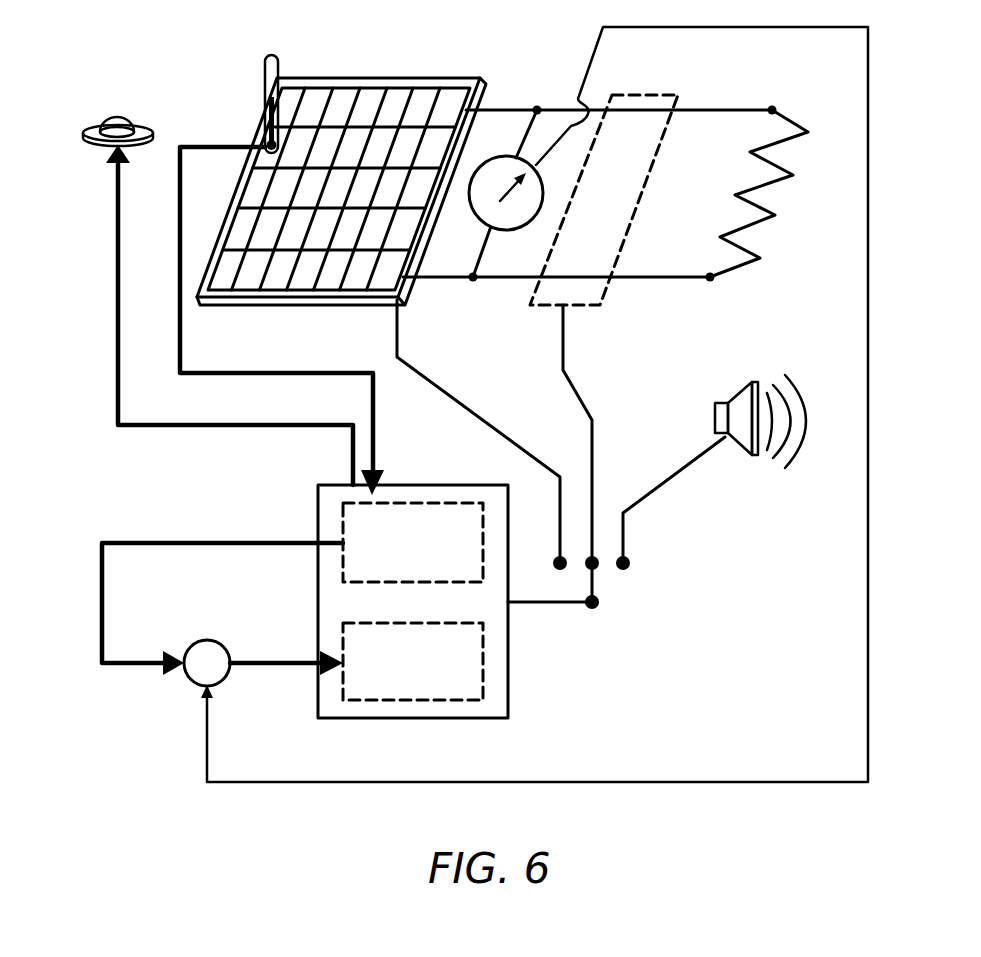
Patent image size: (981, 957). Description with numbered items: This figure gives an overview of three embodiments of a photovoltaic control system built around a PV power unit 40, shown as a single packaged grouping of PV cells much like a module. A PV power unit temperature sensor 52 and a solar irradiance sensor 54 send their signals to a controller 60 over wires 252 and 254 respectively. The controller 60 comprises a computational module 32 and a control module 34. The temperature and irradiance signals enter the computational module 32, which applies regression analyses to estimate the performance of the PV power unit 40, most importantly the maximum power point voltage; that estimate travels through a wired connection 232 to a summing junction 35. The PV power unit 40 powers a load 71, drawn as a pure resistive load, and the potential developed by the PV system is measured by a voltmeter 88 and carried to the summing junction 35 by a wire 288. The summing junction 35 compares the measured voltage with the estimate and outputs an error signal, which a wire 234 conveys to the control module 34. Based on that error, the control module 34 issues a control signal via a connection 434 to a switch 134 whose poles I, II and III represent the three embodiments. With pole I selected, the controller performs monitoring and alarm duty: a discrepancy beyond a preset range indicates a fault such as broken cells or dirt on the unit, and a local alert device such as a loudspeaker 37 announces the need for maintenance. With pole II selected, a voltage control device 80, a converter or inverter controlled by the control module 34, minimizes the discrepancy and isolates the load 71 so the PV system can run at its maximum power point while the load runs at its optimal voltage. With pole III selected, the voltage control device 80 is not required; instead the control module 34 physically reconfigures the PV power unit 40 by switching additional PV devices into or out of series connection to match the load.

The PV power unit 40 is at (367, 77).
The PV power unit temperature sensor 52 is at (262, 75).
The solar irradiance sensor 54 is at (103, 113).
The voltmeter 88 is at (508, 156).
The voltage control device 80 is at (604, 200).
The load 71 is at (750, 243).
The loudspeaker 37 is at (722, 403).
The controller 60 is at (520, 701).
The computational module 32 is at (413, 542).
The control module 34 is at (413, 661).
The summing junction 35 is at (192, 647).
The wire 252 is at (282, 321).
The wire 254 is at (235, 322).
The wired connection 232 is at (222, 593).
The wire 234 is at (286, 655).
The wire 288 is at (868, 543).
The switch 134 is at (596, 584).
The connection 434 is at (589, 609).
The pole I is at (632, 562).
The pole II is at (598, 568).
The pole III is at (553, 562).